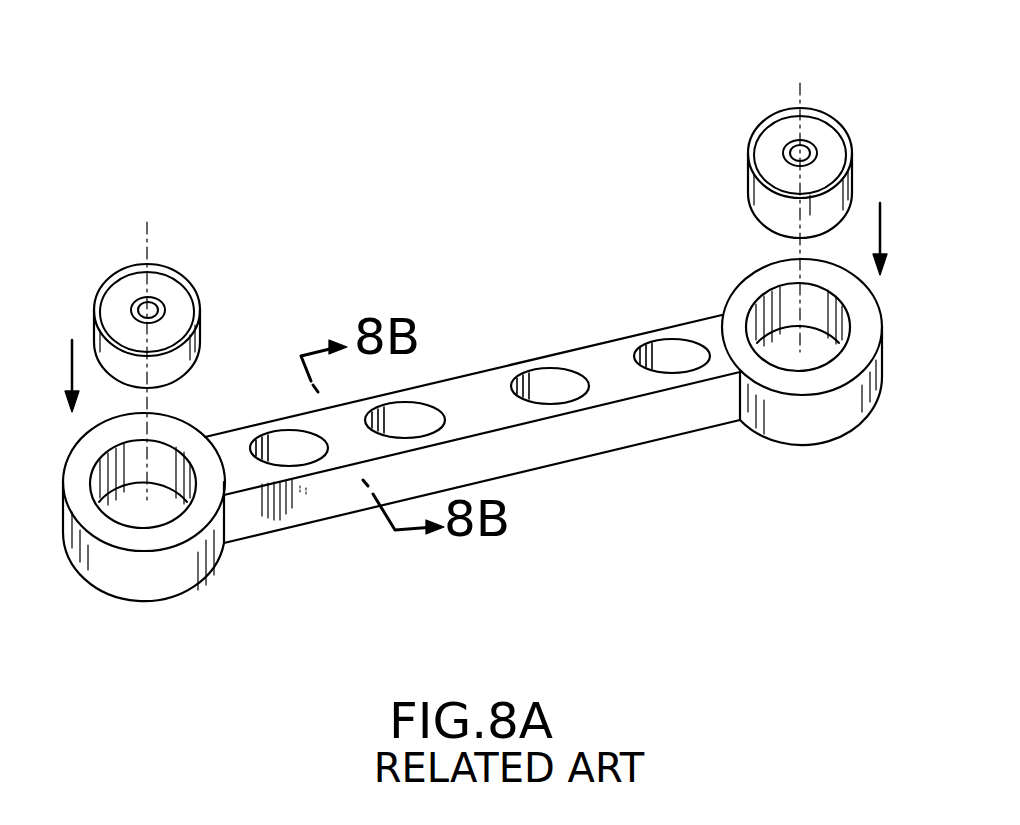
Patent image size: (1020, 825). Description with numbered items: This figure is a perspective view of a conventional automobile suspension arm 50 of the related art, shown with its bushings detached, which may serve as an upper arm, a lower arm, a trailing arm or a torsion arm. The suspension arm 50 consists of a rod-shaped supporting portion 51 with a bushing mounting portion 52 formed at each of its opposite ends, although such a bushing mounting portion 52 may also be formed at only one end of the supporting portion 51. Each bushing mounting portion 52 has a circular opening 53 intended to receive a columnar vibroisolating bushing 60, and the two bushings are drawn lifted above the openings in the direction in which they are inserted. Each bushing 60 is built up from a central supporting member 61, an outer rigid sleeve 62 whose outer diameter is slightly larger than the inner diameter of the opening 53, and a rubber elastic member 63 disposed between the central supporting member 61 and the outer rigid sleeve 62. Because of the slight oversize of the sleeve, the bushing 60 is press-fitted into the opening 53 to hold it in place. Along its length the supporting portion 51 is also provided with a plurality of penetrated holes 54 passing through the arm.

The suspension arm 50 is at (479, 449).
The supporting portion 51 is at (517, 458).
The bushing mounting portion 52 is at (187, 565).
The circular opening 53 is at (144, 494).
The penetrated holes 54 is at (665, 356).
The vibroisolating bushing 60 is at (482, 208).
The central supporting member 61 is at (162, 311).
The outer rigid sleeve 62 is at (168, 268).
The rubber elastic member 63 is at (177, 302).